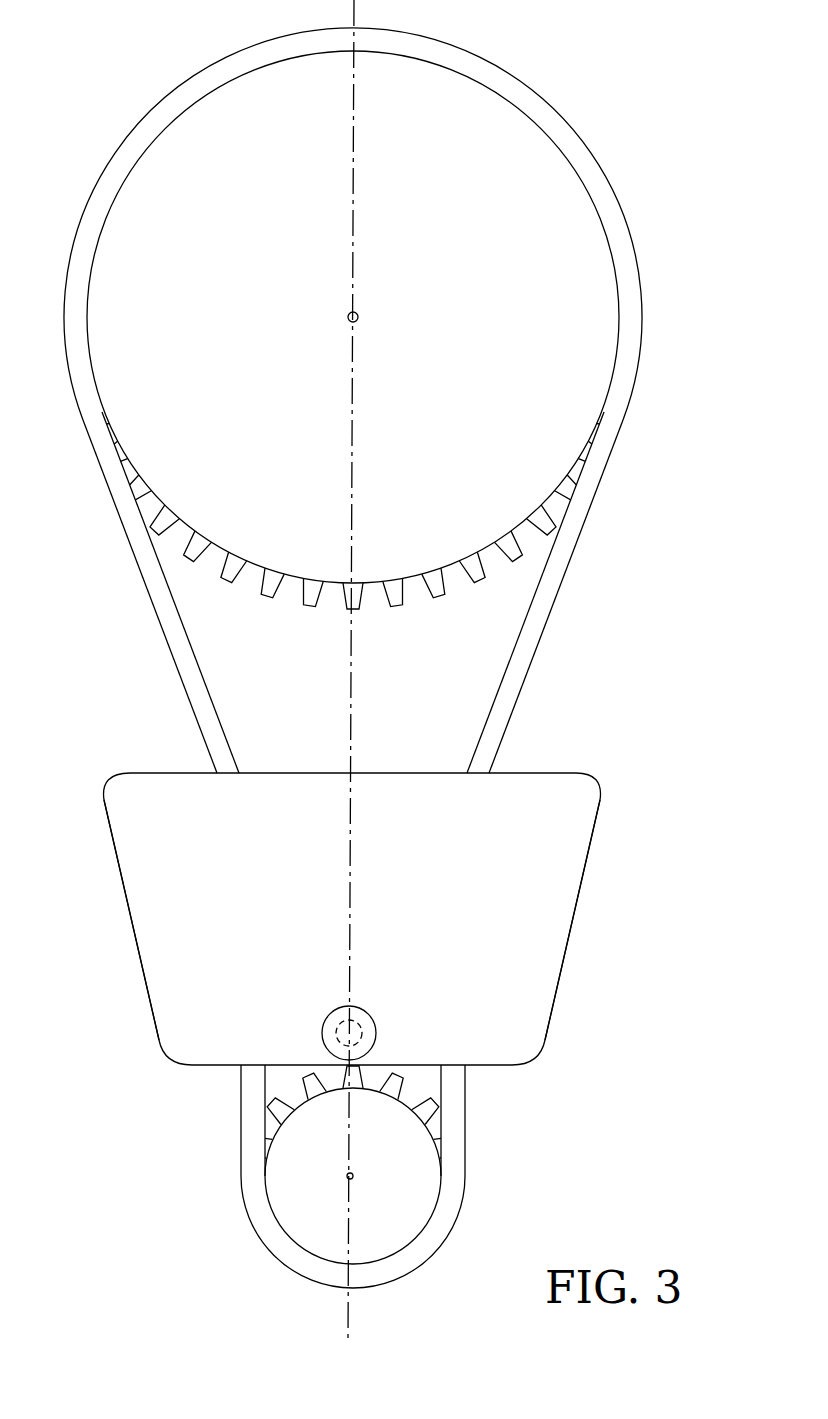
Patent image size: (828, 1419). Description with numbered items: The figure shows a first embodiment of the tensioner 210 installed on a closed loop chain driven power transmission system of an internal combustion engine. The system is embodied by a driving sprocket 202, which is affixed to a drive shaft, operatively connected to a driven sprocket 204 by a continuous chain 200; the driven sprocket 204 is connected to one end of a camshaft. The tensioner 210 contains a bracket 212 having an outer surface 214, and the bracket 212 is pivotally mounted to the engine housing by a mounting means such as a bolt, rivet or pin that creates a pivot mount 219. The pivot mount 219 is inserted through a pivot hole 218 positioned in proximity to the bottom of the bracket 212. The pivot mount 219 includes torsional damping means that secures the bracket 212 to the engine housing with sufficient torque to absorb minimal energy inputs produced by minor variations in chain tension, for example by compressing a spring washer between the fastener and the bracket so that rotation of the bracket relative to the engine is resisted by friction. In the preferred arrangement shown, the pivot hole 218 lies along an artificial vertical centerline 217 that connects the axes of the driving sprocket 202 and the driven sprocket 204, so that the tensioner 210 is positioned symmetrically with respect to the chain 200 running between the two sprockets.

The chain 200 is at (583, 572).
The driving sprocket 202 is at (415, 1185).
The driven sprocket 204 is at (552, 338).
The tensioner 210 is at (620, 858).
The bracket 212 is at (518, 935).
The outer surface 214 is at (160, 916).
The artificial vertical centerline 217 is at (353, 218).
The pivot hole 218 is at (372, 1018).
The pivot mount 219 is at (330, 1015).